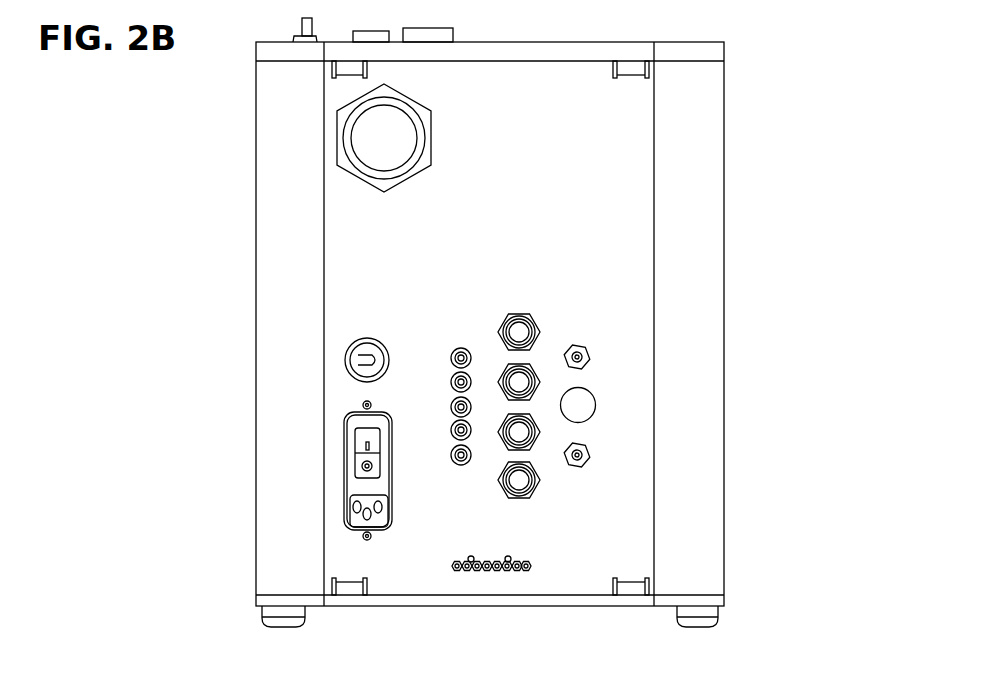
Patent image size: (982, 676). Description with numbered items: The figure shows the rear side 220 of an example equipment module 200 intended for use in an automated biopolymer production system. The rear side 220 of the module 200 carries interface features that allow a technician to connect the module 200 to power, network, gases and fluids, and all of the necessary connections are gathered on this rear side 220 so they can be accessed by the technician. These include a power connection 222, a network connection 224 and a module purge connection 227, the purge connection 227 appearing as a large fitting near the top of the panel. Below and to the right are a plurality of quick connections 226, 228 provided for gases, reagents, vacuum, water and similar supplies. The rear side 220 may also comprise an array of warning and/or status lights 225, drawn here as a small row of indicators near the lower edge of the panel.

The module 200 is at (228, 99).
The rear side 220 is at (318, 190).
The power connection 222 is at (345, 503).
The network connection 224 is at (360, 363).
The array of warning and/or status lights 225 is at (452, 566).
The quick connections 226 is at (535, 328).
The module purge connection 227 is at (366, 170).
The quick connections 228 is at (587, 354).